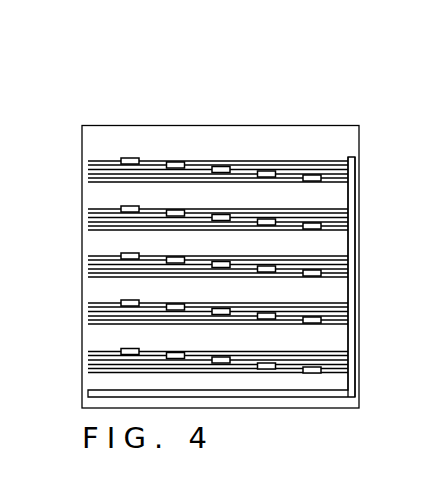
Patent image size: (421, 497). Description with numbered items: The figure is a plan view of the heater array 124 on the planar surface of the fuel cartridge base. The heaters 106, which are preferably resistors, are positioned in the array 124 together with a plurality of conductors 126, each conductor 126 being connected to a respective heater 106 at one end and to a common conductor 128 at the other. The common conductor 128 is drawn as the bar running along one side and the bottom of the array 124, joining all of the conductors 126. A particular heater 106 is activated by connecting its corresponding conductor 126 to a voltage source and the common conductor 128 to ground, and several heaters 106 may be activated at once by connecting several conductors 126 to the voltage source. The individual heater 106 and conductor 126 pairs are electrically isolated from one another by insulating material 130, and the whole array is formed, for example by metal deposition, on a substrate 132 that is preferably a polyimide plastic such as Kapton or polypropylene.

The array 124 is at (218, 267).
The heater 106 is at (272, 369).
The conductor 126 is at (295, 370).
The common conductor 128 is at (355, 310).
The insulating material 130 is at (352, 150).
The substrate 132 is at (361, 217).